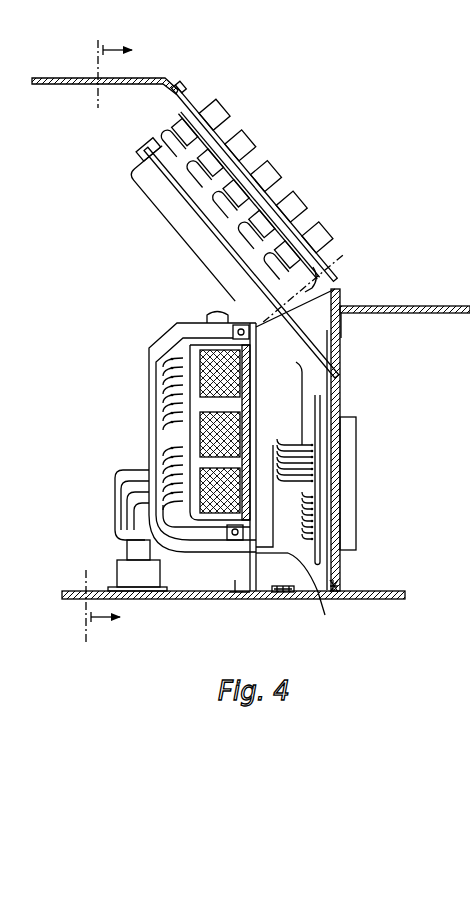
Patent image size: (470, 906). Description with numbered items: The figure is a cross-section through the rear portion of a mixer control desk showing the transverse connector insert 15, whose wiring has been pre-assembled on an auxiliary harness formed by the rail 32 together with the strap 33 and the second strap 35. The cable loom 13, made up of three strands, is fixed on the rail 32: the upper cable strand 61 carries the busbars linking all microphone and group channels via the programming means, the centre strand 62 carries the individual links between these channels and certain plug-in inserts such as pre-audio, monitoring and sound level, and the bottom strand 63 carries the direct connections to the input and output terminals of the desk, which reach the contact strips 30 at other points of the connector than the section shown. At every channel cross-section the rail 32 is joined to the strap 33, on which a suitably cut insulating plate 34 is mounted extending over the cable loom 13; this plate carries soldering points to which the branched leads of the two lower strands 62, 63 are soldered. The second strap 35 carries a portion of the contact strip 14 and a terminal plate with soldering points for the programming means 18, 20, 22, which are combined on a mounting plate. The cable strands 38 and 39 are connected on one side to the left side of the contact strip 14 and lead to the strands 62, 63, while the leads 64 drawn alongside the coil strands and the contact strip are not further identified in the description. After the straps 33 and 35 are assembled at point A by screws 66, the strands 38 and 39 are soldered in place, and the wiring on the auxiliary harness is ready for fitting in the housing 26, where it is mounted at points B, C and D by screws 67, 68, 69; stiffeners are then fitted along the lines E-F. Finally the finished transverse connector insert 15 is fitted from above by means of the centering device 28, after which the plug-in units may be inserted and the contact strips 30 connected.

The cable loom 13 is at (193, 343).
The contact strip 14 is at (346, 470).
The transverse connector insert 15 is at (278, 83).
The programming means 18 is at (240, 145).
The programming means 20 is at (266, 176).
The programming means 22 is at (304, 222).
The housing 26 is at (57, 82).
The centering device 28 is at (285, 597).
The contact strips 30 is at (130, 572).
The rail 32 is at (253, 478).
The strap 33 is at (235, 572).
The insulating plate 34 is at (192, 330).
The second strap 35 is at (330, 360).
The cable strand 38 is at (280, 535).
The cable strand 39 is at (317, 595).
The upper cable strand 61 is at (200, 380).
The centre cable strand 62 is at (207, 440).
The bottom cable strand 63 is at (205, 478).
The contact springs 64 is at (153, 462).
The screws 66 is at (332, 272).
The screw 67 is at (326, 386).
The screw 68 is at (340, 587).
The screw 69 is at (233, 602).